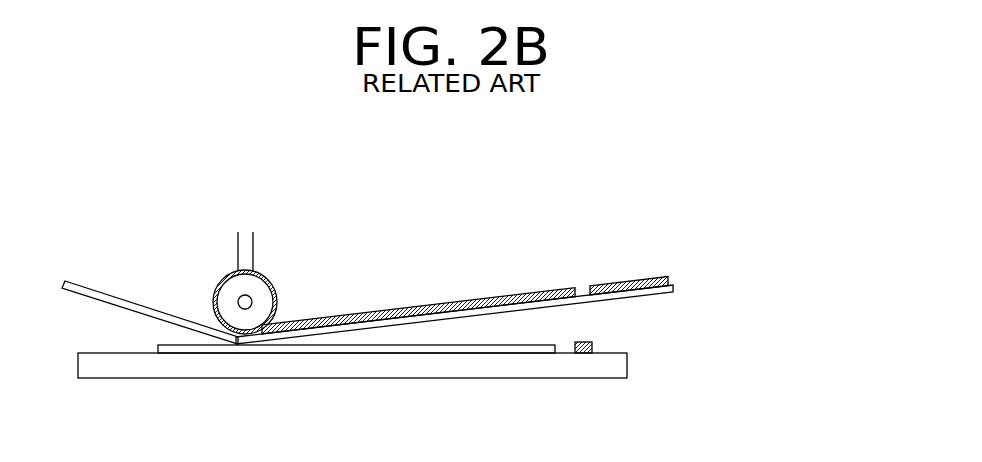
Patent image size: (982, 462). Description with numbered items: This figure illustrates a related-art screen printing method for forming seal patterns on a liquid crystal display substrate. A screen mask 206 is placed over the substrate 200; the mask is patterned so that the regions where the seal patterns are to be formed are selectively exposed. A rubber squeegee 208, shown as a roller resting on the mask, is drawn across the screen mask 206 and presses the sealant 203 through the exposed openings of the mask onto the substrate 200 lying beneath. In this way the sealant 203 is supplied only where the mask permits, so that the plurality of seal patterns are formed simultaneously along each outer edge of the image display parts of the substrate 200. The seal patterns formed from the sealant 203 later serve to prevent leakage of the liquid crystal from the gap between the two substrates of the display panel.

The substrate 200 is at (610, 373).
The screen mask 206 is at (676, 283).
The sealant 203 is at (636, 275).
The rubber squeegee 208 is at (260, 288).